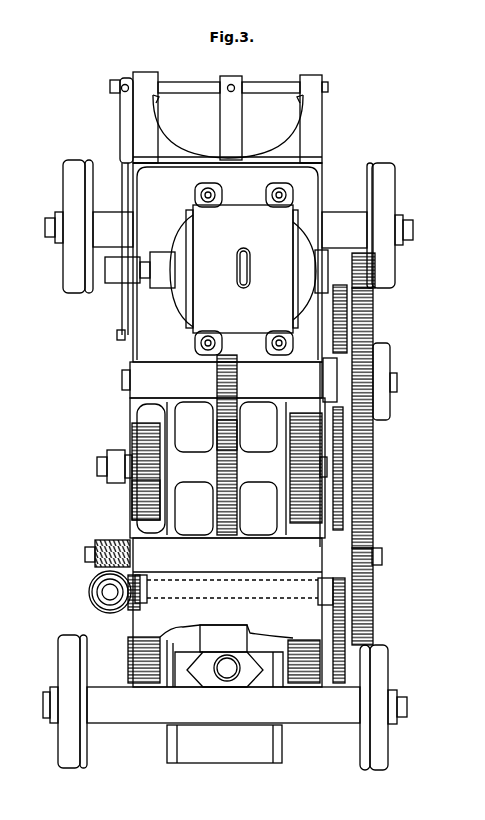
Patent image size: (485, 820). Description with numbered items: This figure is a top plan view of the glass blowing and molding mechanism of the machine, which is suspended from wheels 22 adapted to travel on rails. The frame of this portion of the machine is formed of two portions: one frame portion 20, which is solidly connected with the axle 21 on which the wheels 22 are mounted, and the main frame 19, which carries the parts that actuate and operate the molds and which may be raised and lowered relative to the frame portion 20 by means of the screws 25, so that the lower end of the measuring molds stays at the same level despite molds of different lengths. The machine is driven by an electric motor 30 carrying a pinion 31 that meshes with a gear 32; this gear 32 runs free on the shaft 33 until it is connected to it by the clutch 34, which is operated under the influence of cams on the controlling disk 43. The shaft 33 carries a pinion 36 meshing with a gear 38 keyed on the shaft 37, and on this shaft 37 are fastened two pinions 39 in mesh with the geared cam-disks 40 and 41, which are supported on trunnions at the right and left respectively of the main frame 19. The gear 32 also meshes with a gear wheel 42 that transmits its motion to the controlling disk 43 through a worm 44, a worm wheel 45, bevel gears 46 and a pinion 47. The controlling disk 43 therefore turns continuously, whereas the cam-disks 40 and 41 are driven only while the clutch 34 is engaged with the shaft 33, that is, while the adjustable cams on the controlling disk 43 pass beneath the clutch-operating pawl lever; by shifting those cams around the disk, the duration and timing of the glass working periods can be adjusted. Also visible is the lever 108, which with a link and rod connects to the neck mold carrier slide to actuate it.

The main frame 19 is at (167, 745).
The frame portion 20 is at (206, 680).
The axle 21 is at (227, 467).
The wheels 22 is at (73, 173).
The screws 25 is at (229, 683).
The electric motor 30 is at (216, 269).
The pinion 31 is at (377, 275).
The gear 32 is at (377, 322).
The shaft 33 is at (122, 380).
The clutch 34 is at (380, 357).
The pinion 36 is at (217, 382).
The shaft 37 is at (128, 458).
The gear 38 is at (226, 435).
The pinions 39 is at (153, 493).
The geared cam-disk 40 is at (128, 663).
The geared cam-disk 41 is at (303, 652).
The gear wheel 42 is at (376, 592).
The controlling disk 43 is at (340, 684).
The worm 44 is at (96, 568).
The worm wheel 45 is at (93, 606).
The bevel gears 46 is at (130, 609).
The pinion 47 is at (337, 578).
The lever 108 is at (231, 119).